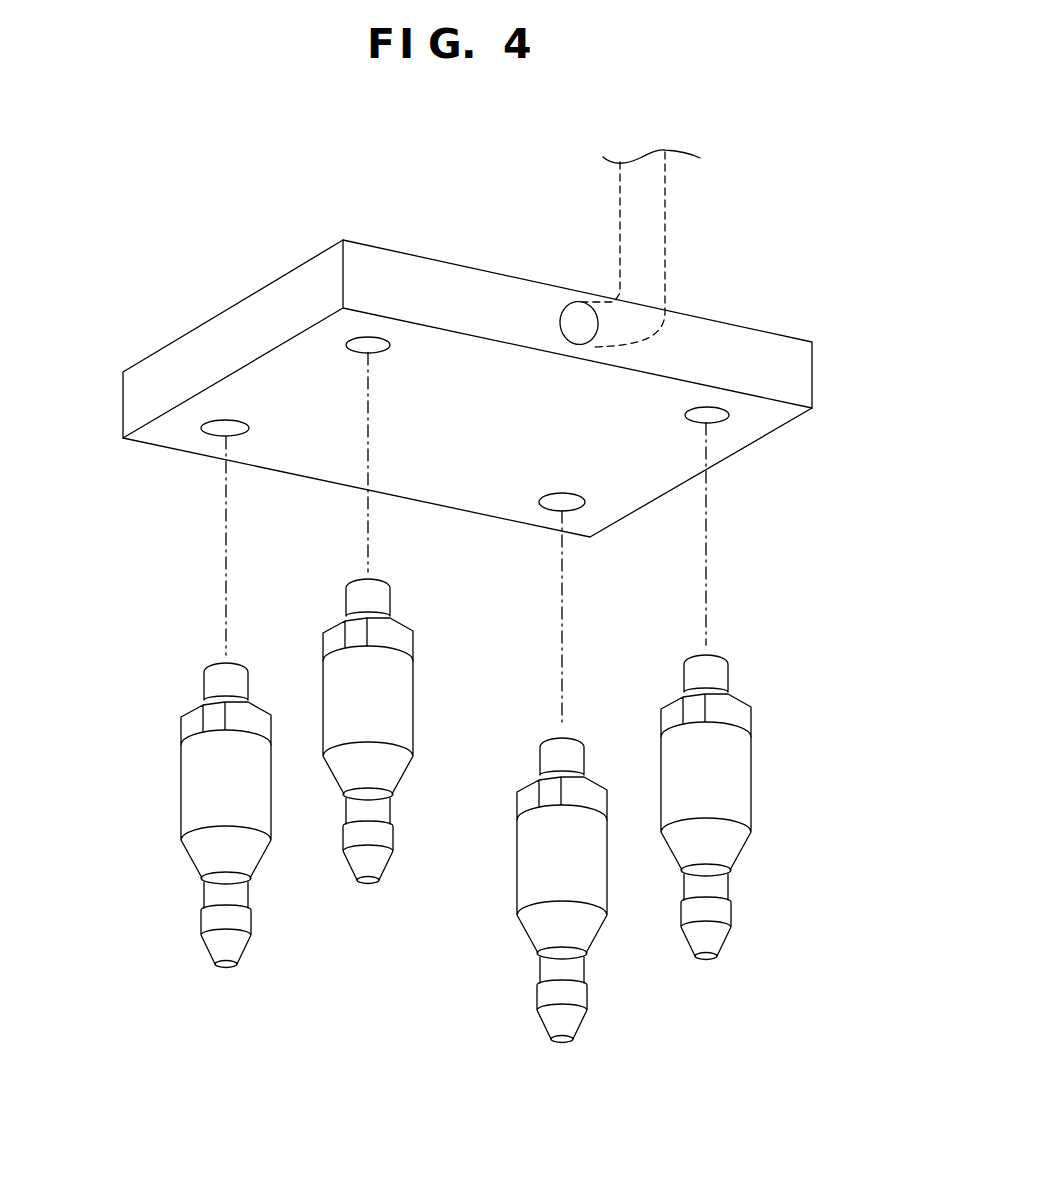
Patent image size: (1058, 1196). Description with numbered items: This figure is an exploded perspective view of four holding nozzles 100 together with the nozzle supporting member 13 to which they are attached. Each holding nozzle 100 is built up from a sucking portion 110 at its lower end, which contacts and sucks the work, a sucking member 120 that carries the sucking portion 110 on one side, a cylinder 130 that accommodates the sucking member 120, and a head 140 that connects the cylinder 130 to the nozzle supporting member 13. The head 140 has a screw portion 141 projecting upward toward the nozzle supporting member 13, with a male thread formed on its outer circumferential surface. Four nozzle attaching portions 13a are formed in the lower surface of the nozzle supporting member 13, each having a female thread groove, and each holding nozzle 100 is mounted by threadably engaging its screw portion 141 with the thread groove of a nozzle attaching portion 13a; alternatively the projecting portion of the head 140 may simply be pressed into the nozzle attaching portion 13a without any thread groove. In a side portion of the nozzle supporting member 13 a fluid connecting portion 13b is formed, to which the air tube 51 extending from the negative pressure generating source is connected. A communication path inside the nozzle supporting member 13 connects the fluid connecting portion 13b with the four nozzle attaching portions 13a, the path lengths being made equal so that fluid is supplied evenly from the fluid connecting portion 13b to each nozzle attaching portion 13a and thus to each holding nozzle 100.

The nozzle supporting member 13 is at (283, 293).
The nozzle attaching portion 13a is at (377, 343).
The fluid connecting portion 13b is at (570, 312).
The air tube 51 is at (622, 228).
The holding nozzle 100 is at (439, 799).
The sucking portion 110 is at (439, 932).
The sucking member 120 is at (437, 881).
The cylinder 130 is at (445, 810).
The head 140 is at (454, 700).
The screw portion 141 is at (485, 665).